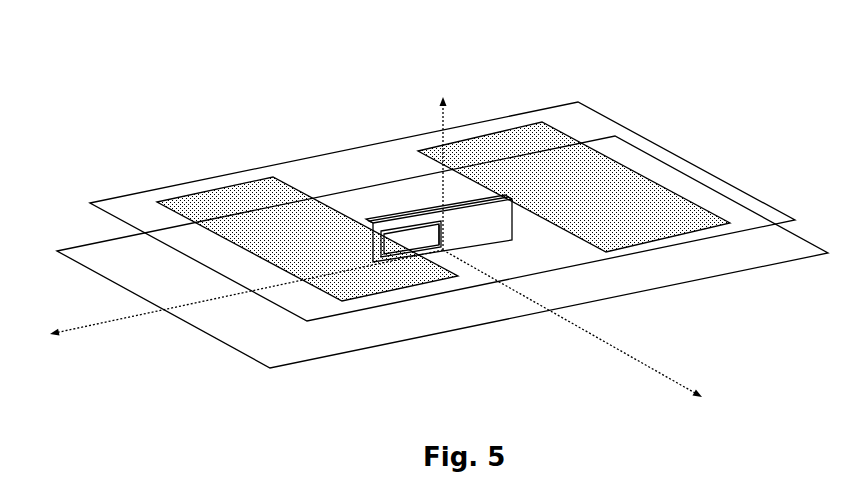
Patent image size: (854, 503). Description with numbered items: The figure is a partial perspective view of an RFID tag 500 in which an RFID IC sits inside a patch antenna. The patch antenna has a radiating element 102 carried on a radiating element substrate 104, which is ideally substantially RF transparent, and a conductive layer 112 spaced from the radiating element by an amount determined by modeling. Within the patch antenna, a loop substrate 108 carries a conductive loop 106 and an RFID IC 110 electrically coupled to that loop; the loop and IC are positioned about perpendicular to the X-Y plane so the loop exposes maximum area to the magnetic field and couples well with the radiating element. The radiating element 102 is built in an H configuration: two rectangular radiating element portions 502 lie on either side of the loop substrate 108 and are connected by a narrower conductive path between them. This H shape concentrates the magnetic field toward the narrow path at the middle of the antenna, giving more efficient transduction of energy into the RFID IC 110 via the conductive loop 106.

The RFID tag 500 is at (78, 63).
The radiating element 102 is at (505, 100).
The radiating element substrate 104 is at (587, 127).
The conductive loop 106 is at (382, 246).
The loop substrate 108 is at (487, 228).
The RFID IC 110 is at (440, 247).
The conductive layer 112 is at (218, 325).
The rectangular radiating element portions 502 is at (428, 213).